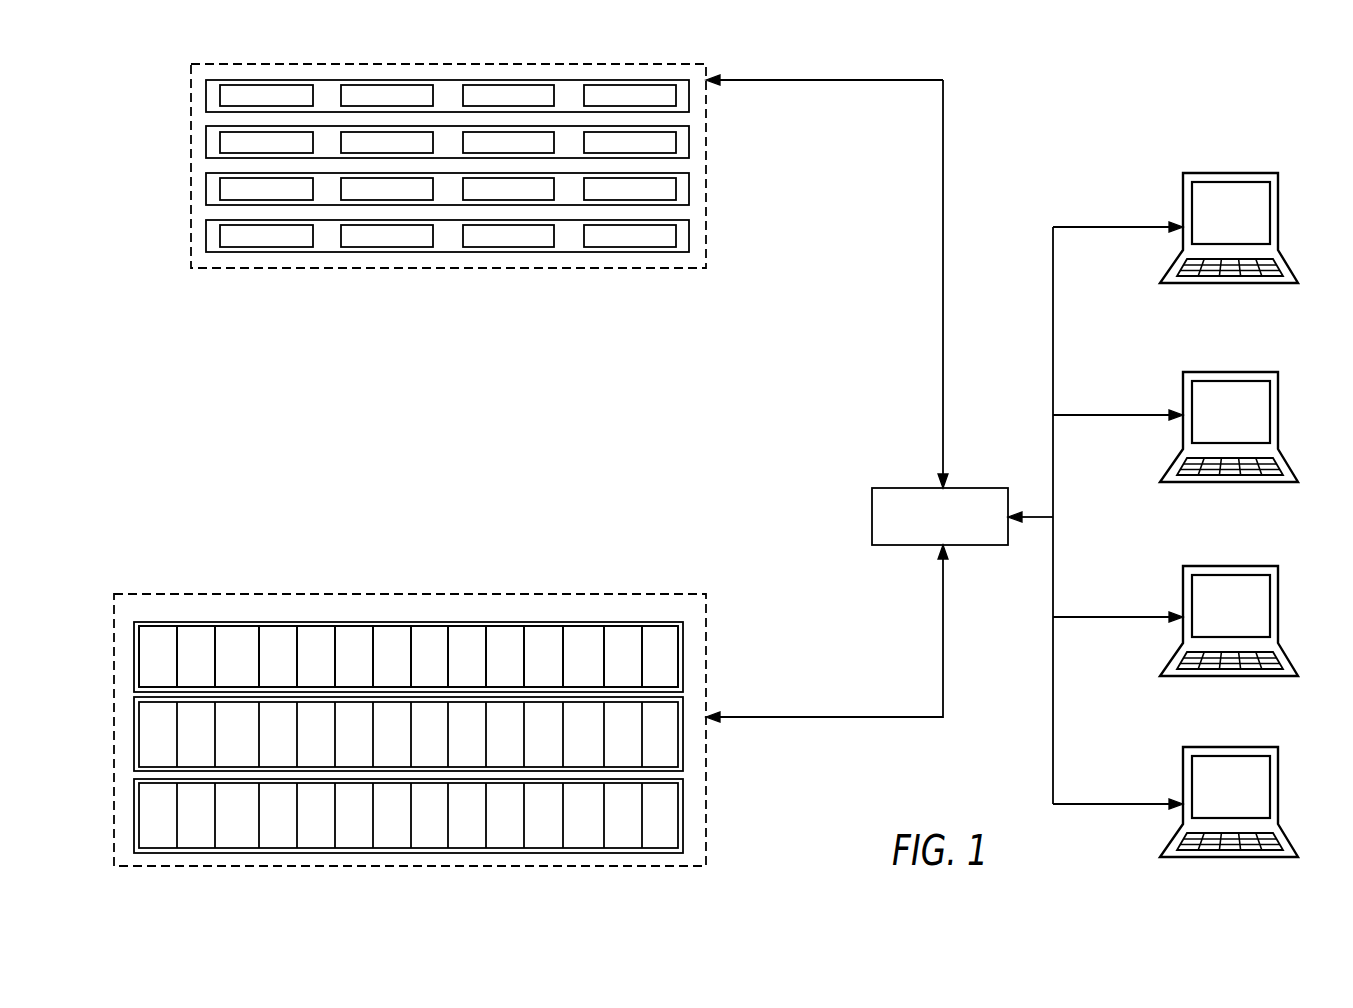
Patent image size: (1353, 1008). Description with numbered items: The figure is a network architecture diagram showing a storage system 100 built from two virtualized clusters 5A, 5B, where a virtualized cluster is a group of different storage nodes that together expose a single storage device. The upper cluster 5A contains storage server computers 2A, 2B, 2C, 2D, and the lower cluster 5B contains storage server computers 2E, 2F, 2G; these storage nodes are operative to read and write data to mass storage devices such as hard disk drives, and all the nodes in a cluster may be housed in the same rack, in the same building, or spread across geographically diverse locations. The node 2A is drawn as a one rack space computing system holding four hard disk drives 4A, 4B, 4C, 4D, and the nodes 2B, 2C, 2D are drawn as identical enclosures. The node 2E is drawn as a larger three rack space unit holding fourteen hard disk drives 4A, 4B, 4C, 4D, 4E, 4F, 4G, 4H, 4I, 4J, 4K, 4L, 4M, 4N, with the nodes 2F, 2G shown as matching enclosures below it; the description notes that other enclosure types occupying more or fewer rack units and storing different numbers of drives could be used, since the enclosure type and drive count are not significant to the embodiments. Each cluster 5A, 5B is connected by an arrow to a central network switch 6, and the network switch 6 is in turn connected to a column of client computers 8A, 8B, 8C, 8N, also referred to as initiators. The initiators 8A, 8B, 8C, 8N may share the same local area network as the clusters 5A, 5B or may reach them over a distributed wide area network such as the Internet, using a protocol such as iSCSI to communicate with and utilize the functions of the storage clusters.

The storage system 100 is at (1056, 86).
The virtualized cluster 5A is at (448, 155).
The virtualized cluster 5B is at (410, 719).
The storage server computer 2A is at (491, 102).
The storage server computer 2B is at (491, 148).
The storage server computer 2C is at (491, 195).
The storage server computer 2D is at (492, 242).
The storage server computer 2E is at (450, 657).
The storage server computer 2F is at (450, 736).
The storage server computer 2G is at (452, 816).
The hard disk drive 4A is at (255, 106).
The hard disk drive 4B is at (376, 106).
The hard disk drive 4C is at (497, 106).
The hard disk drive 4D is at (619, 106).
The hard disk drive 4E is at (304, 667).
The hard disk drive 4F is at (342, 667).
The hard disk drive 4G is at (380, 667).
The hard disk drive 4H is at (417, 667).
The hard disk drive 4I is at (458, 667).
The hard disk drive 4J is at (494, 667).
The hard disk drive 4K is at (531, 667).
The hard disk drive 4L is at (572, 667).
The hard disk drive 4M is at (610, 667).
The hard disk drive 4N is at (648, 667).
The network switch 6 is at (939, 506).
The client computer 8A is at (1229, 218).
The client computer 8B is at (1229, 417).
The client computer 8C is at (1229, 611).
The client computer 8N is at (1229, 792).